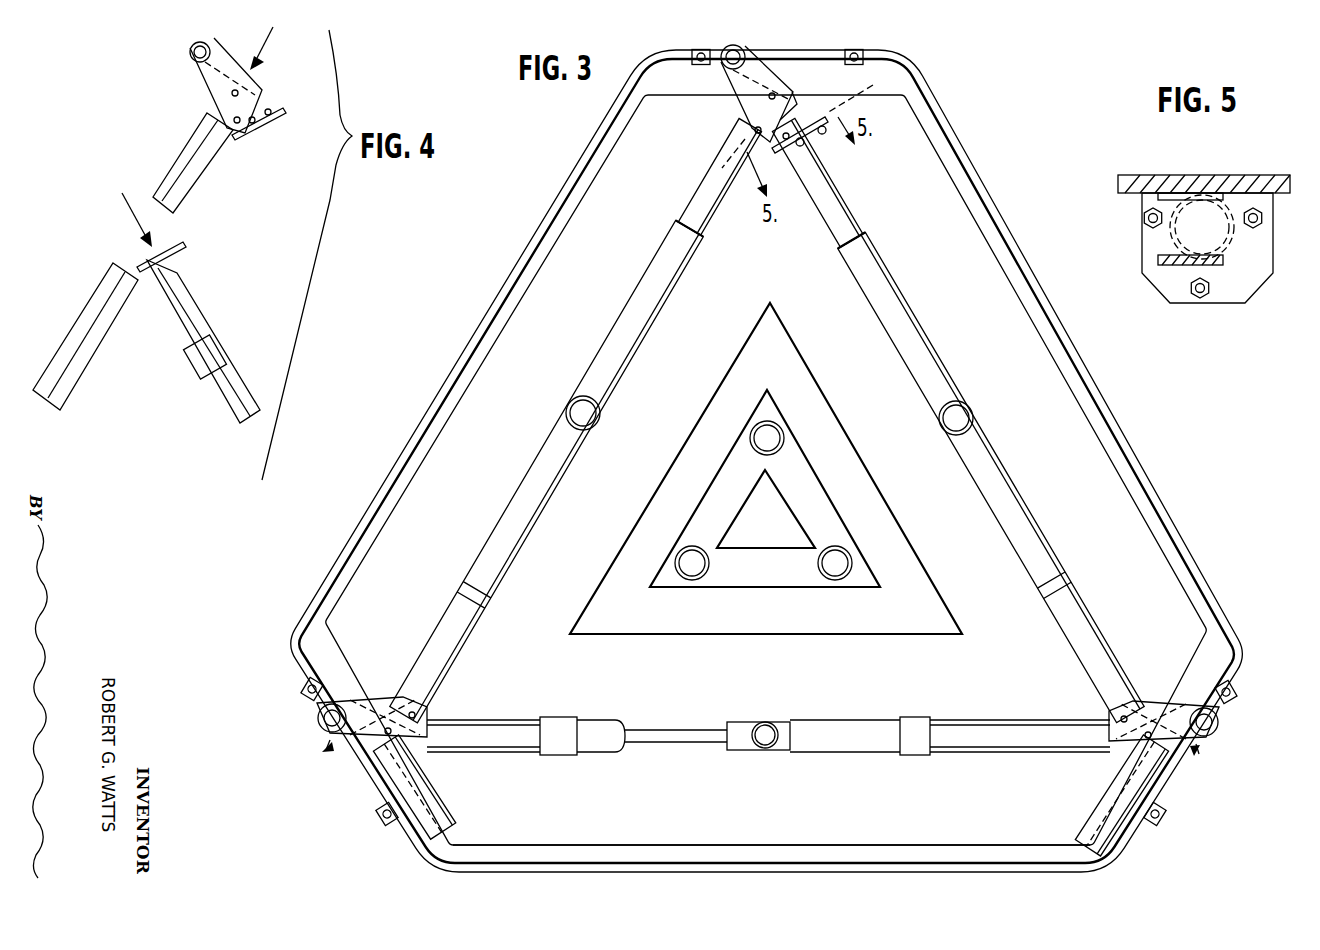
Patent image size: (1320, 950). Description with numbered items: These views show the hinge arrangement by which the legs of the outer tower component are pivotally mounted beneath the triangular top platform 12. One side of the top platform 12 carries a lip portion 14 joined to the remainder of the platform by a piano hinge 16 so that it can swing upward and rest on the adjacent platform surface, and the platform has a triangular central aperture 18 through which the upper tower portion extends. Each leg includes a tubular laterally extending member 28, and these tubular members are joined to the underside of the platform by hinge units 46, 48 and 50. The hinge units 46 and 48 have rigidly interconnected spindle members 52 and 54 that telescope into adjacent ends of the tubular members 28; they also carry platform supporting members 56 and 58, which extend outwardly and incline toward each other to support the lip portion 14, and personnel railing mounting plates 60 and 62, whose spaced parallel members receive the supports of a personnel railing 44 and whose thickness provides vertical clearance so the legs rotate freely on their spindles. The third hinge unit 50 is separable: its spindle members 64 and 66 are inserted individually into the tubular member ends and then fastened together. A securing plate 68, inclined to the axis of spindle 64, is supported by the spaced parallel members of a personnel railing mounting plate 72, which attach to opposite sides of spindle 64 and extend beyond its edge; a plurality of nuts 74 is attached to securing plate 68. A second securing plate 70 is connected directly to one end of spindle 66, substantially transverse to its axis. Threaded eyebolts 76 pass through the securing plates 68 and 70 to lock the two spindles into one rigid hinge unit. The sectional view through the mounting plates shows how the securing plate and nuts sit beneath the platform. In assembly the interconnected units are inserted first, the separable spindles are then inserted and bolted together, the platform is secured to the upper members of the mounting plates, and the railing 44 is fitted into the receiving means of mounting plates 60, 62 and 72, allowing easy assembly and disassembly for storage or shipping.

In FIG. 3, the top platform 12 is at (599, 290).
In FIG. 5, the top platform 12 is at (1148, 178).
In FIG. 3, the lip portion 14 is at (623, 807).
In FIG. 3, the piano hinge 16 is at (683, 728).
In FIG. 3, the central aperture 18 is at (778, 372).
In FIG. 3, the tubular laterally extending member 28 is at (619, 352).
In FIG. 3, the personnel railing 44 is at (444, 395).
In FIG. 3, the hinge unit 46 is at (320, 749).
In FIG. 3, the hinge unit 48 is at (1190, 768).
In FIG. 3, the hinge unit 50 is at (800, 79).
In FIG. 3, the spindle member 52 is at (441, 628).
In FIG. 3, the spindle member 54 is at (514, 742).
In FIG. 3, the platform supporting member 56 is at (456, 815).
In FIG. 3, the platform supporting member 58 is at (1078, 822).
In FIG. 3, the personnel railing mounting plate 60 is at (318, 716).
In FIG. 3, the personnel railing mounting plate 62 is at (1210, 736).
In FIG. 3, the separable spindle member 64 is at (742, 152).
In FIG. 4, the separable spindle member 64 is at (178, 131).
In FIG. 3, the separable spindle member 66 is at (851, 212).
In FIG. 4, the separable spindle member 66 is at (196, 312).
In FIG. 4, the securing plate 68 is at (270, 132).
In FIG. 5, the securing plate 68 is at (1148, 261).
In FIG. 4, the securing plate 70 is at (185, 240).
In FIG. 4, the personnel railing mounting plate 72 is at (203, 84).
In FIG. 4, the nuts 74 is at (268, 108).
In FIG. 5, the nuts 74 is at (1208, 300).
In FIG. 3, the threaded eyebolts 76 is at (824, 140).